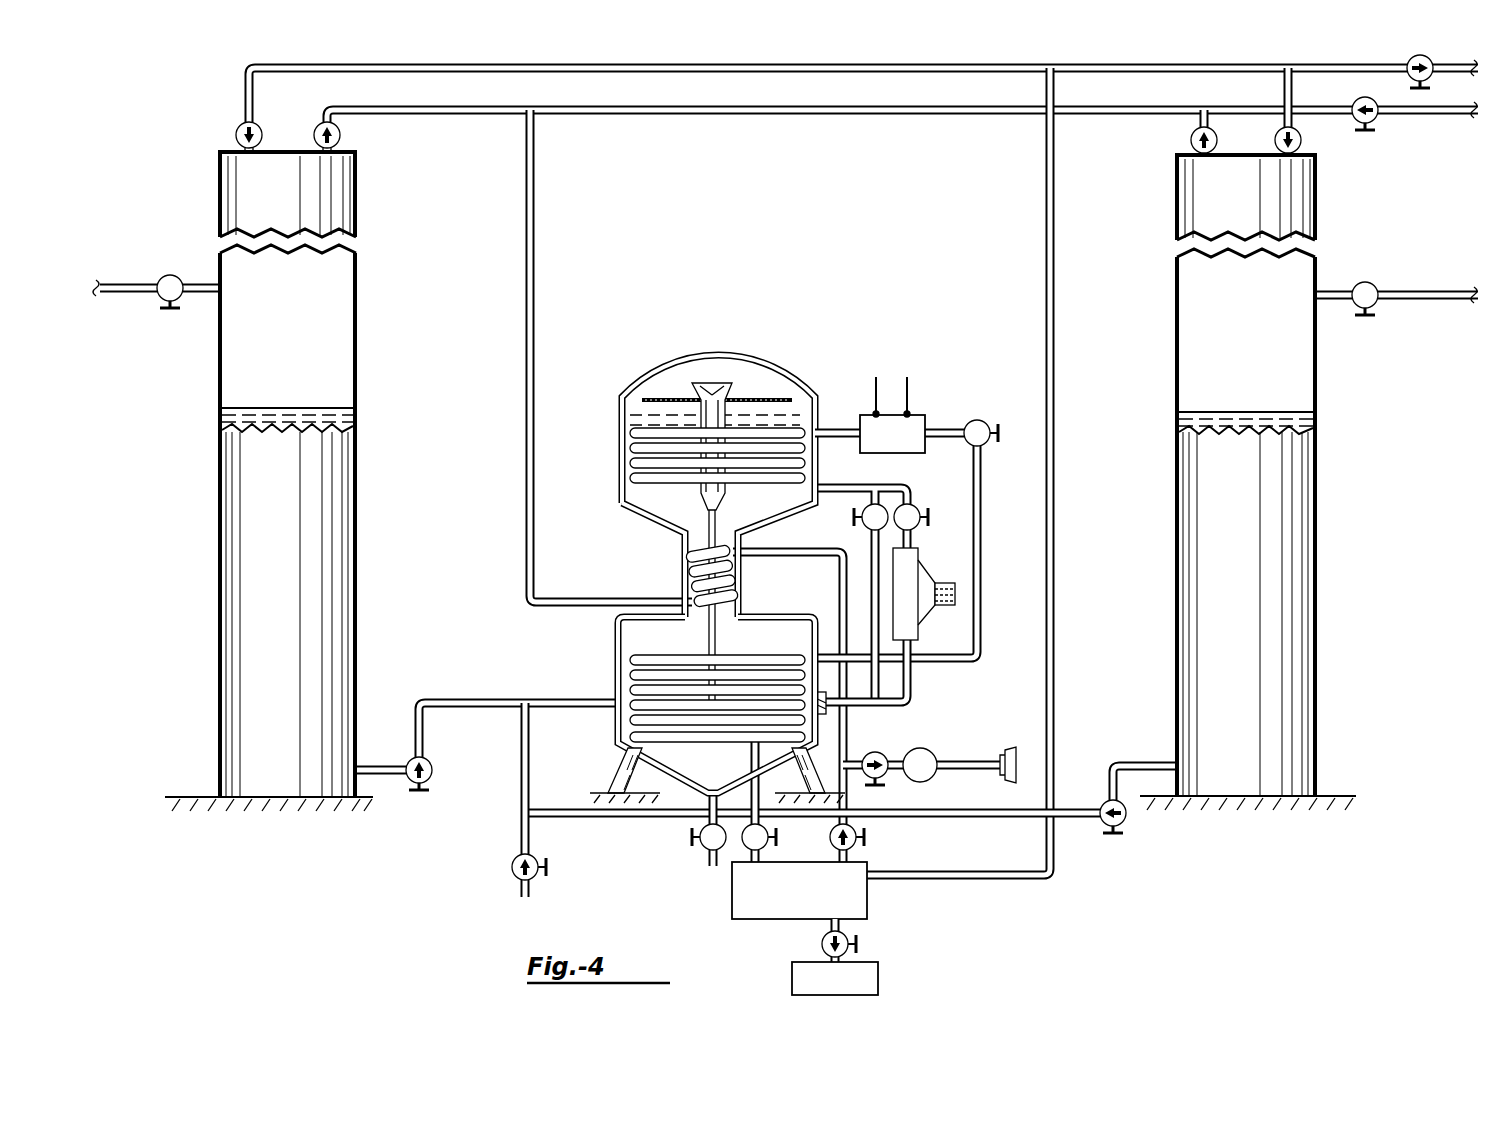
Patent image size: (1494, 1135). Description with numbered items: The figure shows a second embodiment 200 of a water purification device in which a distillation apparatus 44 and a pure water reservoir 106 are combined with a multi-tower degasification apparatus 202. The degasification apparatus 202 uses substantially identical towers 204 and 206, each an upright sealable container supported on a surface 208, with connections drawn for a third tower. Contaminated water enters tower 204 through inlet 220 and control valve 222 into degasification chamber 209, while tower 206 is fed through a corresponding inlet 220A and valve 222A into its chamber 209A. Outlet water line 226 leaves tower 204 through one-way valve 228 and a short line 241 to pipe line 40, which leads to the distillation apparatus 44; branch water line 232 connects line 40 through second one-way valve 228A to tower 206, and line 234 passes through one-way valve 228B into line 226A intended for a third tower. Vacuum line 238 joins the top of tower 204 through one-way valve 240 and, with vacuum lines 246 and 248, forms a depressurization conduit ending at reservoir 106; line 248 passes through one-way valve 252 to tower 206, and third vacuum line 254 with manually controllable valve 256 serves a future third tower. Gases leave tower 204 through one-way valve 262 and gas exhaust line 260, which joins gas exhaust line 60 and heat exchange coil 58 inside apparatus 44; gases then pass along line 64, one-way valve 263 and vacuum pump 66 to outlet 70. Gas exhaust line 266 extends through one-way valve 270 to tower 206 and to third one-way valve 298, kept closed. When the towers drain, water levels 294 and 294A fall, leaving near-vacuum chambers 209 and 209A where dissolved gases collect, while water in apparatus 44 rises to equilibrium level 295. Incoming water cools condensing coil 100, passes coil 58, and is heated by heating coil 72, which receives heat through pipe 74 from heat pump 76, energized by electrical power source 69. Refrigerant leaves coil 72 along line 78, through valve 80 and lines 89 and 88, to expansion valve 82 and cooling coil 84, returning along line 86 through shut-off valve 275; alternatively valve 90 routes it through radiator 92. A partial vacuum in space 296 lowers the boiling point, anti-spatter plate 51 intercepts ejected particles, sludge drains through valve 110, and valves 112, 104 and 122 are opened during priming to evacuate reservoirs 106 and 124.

The second embodiment of water purification device 200 is at (789, 523).
The degasification apparatus 202 is at (767, 474).
The degasification tower 204 is at (358, 560).
The second degasification tower 206 is at (1318, 453).
The surface 208 is at (188, 795).
The degasification chamber 209 is at (340, 282).
The evacuated chamber 209A is at (1200, 282).
The contaminated water inlet 220 is at (128, 297).
The second inlet line 220A is at (1412, 303).
The control valve 222 is at (176, 276).
The valve 222A is at (1372, 283).
The outlet water line 226 is at (374, 765).
The line 226A is at (521, 893).
The one-way control valve 228 is at (433, 766).
The second one-way control valve 228A is at (1128, 817).
The one-way valve 228B is at (511, 858).
The branch water line 232 is at (535, 808).
The line 234 is at (519, 828).
The vacuum line 238 is at (252, 58).
The one-way valve 240 is at (236, 136).
The feed line 241 is at (452, 698).
The vacuum line 246 is at (1044, 280).
The vacuum line 248 is at (1283, 82).
The one-way valve 252 is at (1302, 141).
The third vacuum line 254 is at (1372, 73).
The manually controllable one-way valve 256 is at (1433, 76).
The gas exhaust line 260 is at (524, 115).
The one-way valve 262 is at (341, 136).
The one-way valve 263 is at (878, 779).
The gas exhaust line 266 is at (733, 116).
The one-way valve 270 is at (1190, 140).
The shut-off valve 275 is at (972, 420).
The water level 294 is at (300, 405).
The water level 294A is at (1268, 408).
The equilibrium level 295 is at (626, 405).
The space 296 is at (760, 372).
The third one-way valve 298 is at (1380, 120).
The pipe line 40 is at (568, 698).
The distillation apparatus 44 is at (766, 503).
The anti-spatter plate 51 is at (779, 396).
The heat exchange coil 58 is at (688, 572).
The gas exhaust line 60 is at (524, 412).
The line 64 is at (757, 558).
The vacuum pump 66 is at (930, 752).
The electrical power source 69 is at (893, 378).
The outlet 70 is at (960, 770).
The heating coil 72 is at (704, 483).
The pipe 74 is at (830, 428).
The heat pump 76 is at (907, 394).
The line 78 is at (826, 490).
The valve 80 is at (862, 528).
The expansion valve 82 is at (828, 708).
The cooling coil 84 is at (636, 660).
The line 86 is at (982, 626).
The line 88 is at (913, 676).
The line 89 is at (866, 708).
The valve 90 is at (912, 506).
The radiator 92 is at (928, 572).
The condensing coil 100 is at (672, 752).
The valve 104 is at (785, 845).
The pure water reservoir 106 is at (732, 900).
The valve 110 is at (698, 847).
The valve 112 is at (855, 848).
The valve 122 is at (820, 944).
The pure water reservoir 124 is at (880, 978).